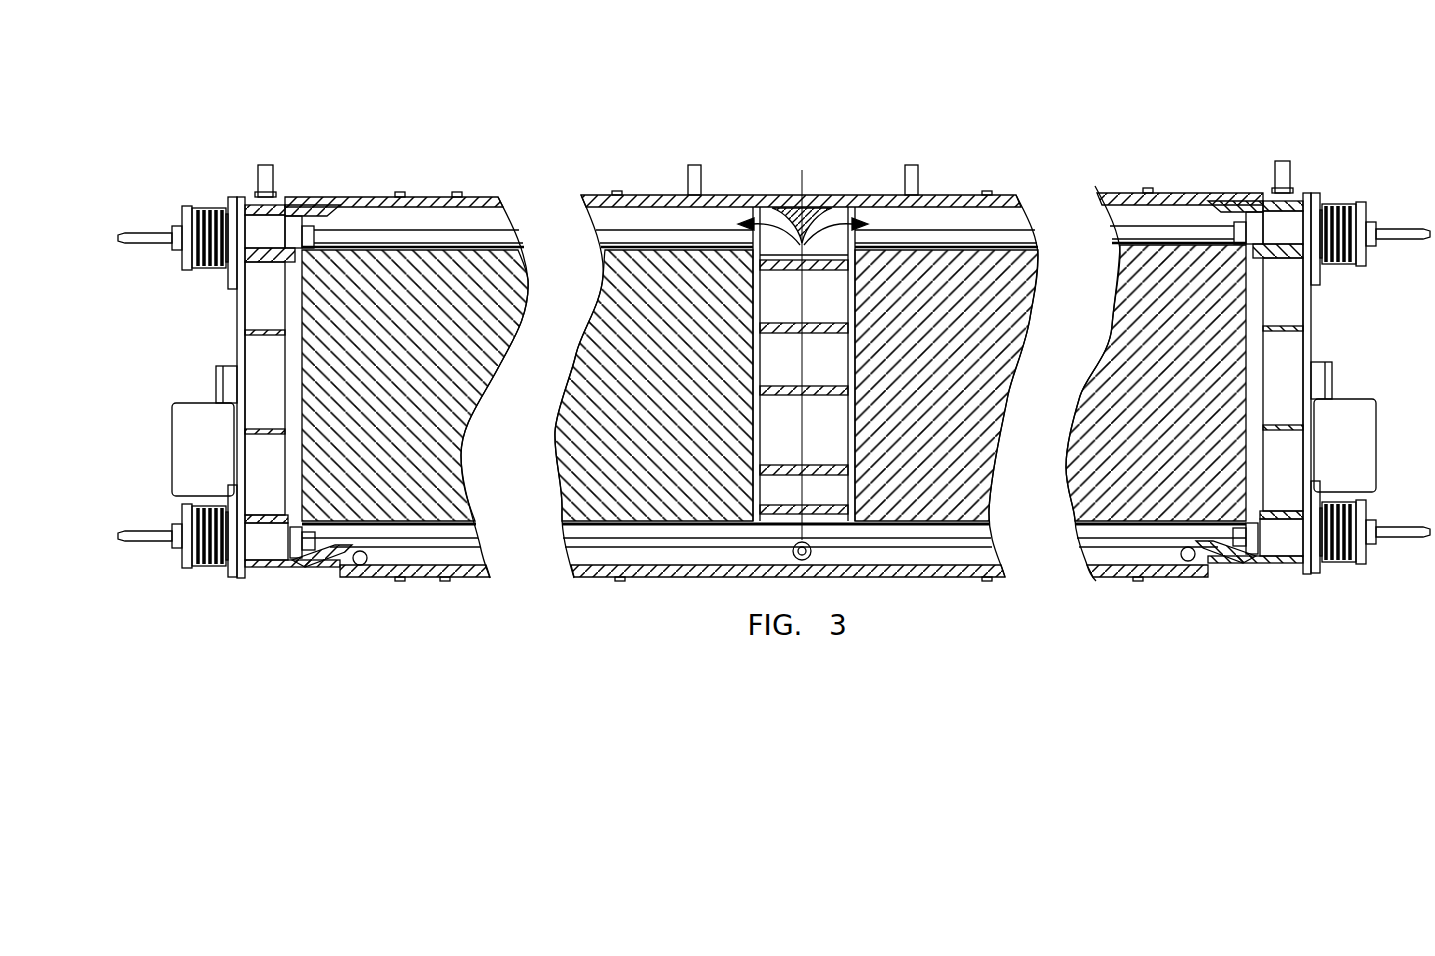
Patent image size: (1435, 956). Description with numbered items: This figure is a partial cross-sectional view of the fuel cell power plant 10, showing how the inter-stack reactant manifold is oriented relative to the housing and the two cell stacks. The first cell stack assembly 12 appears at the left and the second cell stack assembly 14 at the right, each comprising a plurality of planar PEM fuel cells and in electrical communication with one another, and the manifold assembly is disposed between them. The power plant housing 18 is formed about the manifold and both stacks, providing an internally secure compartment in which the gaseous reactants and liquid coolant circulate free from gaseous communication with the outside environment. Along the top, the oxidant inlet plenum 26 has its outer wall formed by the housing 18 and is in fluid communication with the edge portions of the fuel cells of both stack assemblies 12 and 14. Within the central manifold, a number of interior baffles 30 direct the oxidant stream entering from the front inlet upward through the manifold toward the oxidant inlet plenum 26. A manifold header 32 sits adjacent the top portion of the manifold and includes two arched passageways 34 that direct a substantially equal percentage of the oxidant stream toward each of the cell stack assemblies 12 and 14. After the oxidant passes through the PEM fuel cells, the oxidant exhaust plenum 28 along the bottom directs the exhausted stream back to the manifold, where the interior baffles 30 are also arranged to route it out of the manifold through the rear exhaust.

The fuel cell power plant 10 is at (368, 121).
The first cell stack assembly 12 is at (397, 367).
The second cell stack assembly 14 is at (1186, 395).
The power plant housing 18 is at (471, 194).
The oxidant inlet plenum 26 is at (914, 233).
The oxidant exhaust plenum 28 is at (668, 547).
The interior baffles 30 is at (823, 340).
The manifold header 32 is at (783, 208).
The arched passageways 34 is at (782, 232).